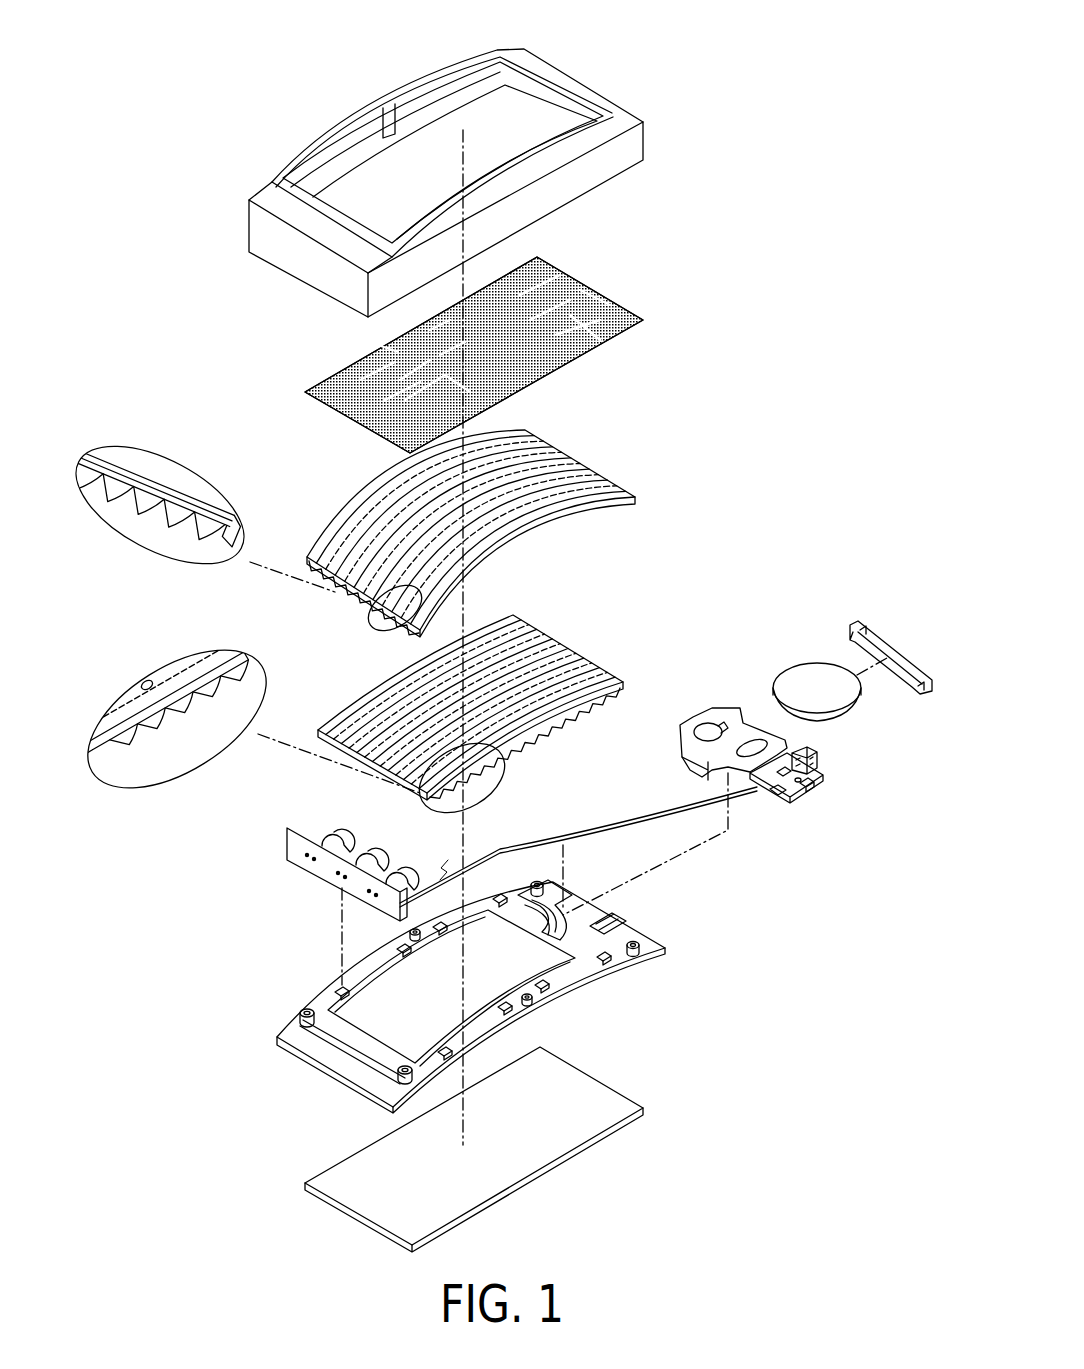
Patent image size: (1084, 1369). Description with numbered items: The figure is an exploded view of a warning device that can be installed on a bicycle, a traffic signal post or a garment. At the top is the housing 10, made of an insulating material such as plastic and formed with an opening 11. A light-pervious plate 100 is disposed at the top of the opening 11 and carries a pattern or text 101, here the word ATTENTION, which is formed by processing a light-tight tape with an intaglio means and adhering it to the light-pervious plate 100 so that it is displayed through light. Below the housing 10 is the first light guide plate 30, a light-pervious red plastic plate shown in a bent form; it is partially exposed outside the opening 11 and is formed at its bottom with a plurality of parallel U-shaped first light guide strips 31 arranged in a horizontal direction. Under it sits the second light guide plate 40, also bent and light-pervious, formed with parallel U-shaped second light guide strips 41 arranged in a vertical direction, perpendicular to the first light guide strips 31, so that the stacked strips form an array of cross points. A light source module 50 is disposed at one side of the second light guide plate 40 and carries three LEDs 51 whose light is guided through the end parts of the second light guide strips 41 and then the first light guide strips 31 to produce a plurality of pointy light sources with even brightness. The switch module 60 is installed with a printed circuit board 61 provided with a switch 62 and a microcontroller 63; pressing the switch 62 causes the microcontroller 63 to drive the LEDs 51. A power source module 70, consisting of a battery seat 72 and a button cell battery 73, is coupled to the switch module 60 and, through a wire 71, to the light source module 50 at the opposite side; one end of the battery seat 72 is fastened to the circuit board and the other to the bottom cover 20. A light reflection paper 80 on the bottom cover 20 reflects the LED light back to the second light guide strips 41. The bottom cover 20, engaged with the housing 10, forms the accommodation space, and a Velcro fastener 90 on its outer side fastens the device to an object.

The housing 10 is at (255, 227).
The opening 11 is at (525, 105).
The light-pervious plate 100 is at (593, 293).
The pattern or text 101 is at (380, 347).
The first light guide plate 30 is at (567, 450).
The first light guide strips 31 is at (115, 513).
The second light guide plate 40 is at (580, 650).
The second light guide strips 41 is at (157, 725).
The light source module 50 is at (287, 834).
The LED 51 is at (333, 838).
The switch module 60 is at (824, 783).
The printed circuit board 61 is at (780, 795).
The switch 62 is at (817, 748).
The microcontroller 63 is at (808, 790).
The power source module 70 is at (670, 697).
The wire 71 is at (581, 826).
The battery seat 72 is at (680, 735).
The button cell battery 73 is at (815, 672).
The light reflection paper 80 is at (533, 966).
The bottom cover 20 is at (323, 1065).
The Velcro fastener 90 is at (593, 1091).